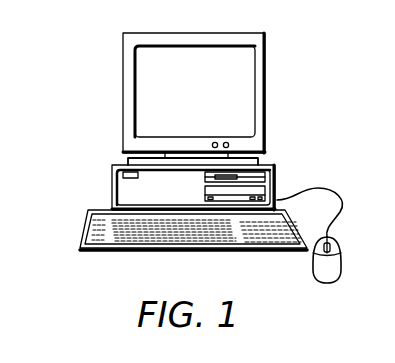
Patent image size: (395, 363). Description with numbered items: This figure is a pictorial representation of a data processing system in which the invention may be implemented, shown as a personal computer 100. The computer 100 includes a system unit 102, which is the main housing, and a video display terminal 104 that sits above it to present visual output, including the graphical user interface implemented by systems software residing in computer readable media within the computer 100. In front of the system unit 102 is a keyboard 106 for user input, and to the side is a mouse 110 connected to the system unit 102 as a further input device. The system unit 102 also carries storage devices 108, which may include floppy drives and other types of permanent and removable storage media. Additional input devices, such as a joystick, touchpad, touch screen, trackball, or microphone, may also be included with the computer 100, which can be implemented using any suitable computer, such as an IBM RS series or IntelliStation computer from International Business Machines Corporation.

The computer 100 is at (64, 80).
The system unit 102 is at (182, 175).
The video display terminal 104 is at (266, 97).
The keyboard 106 is at (105, 252).
The storage devices 108 is at (243, 178).
The mouse 110 is at (325, 283).